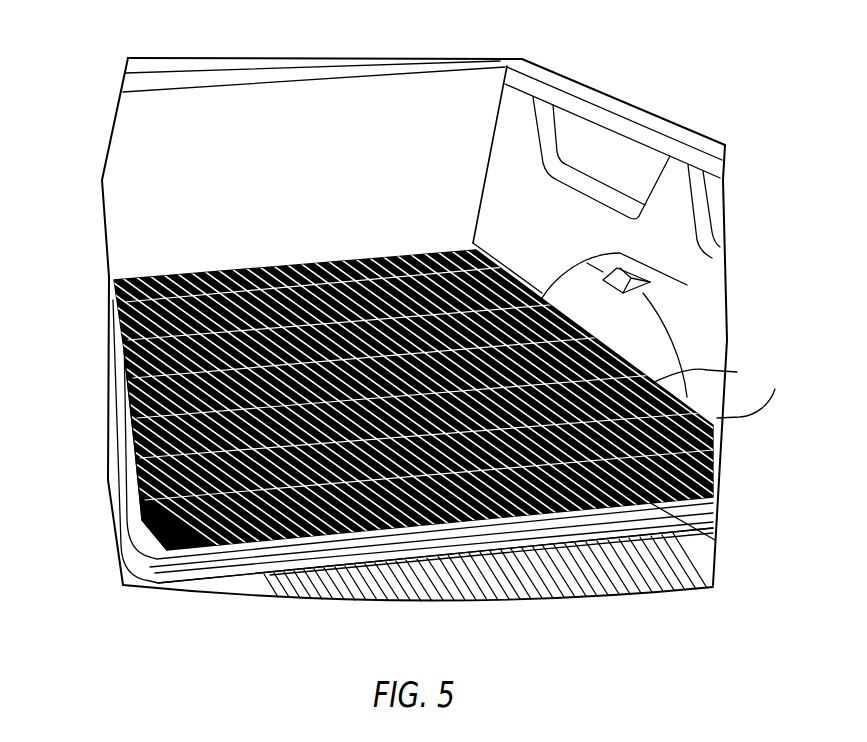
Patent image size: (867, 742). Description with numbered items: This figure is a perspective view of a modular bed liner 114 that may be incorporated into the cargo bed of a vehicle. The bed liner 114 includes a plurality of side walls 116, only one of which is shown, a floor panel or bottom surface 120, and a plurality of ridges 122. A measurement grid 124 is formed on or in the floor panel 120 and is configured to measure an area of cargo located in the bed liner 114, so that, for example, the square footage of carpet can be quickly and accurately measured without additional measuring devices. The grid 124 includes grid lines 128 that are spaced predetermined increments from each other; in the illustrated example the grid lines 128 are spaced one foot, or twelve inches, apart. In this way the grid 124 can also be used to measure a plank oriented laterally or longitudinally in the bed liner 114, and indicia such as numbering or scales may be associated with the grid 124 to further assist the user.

The modular bed liner 114 is at (80, 296).
The side wall 116 is at (677, 188).
The floor panel 120 is at (713, 537).
The ridges 122 is at (716, 472).
The measurement grid 124 is at (143, 472).
The grid lines 128 is at (737, 372).